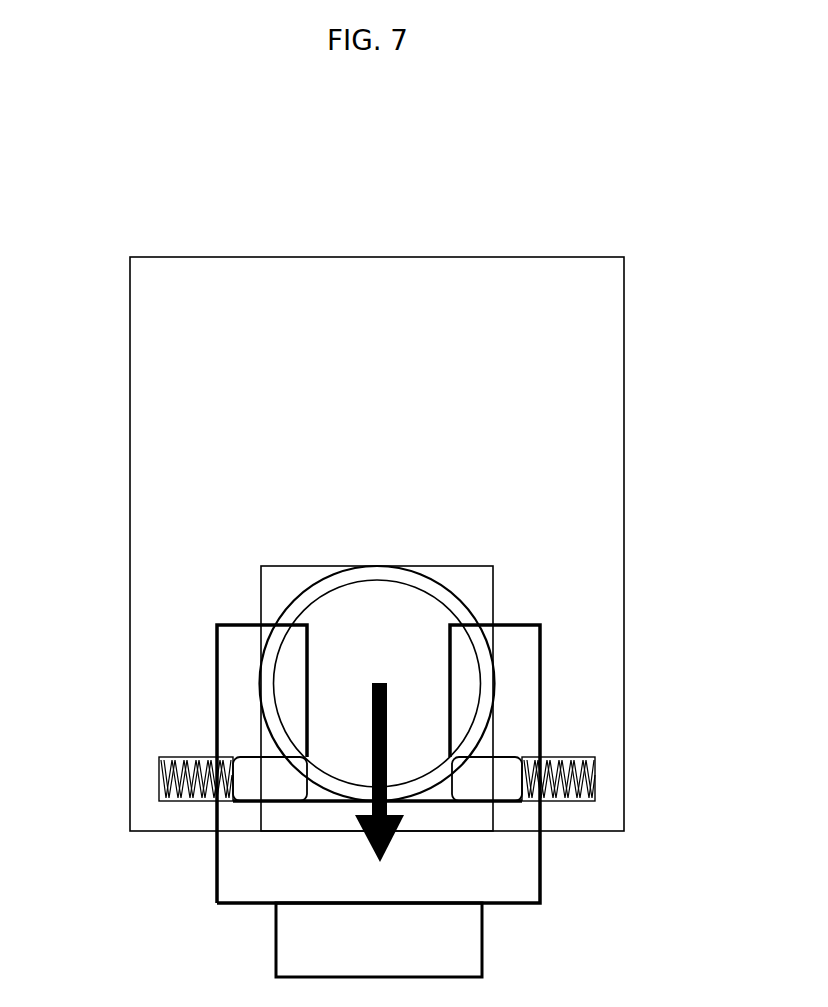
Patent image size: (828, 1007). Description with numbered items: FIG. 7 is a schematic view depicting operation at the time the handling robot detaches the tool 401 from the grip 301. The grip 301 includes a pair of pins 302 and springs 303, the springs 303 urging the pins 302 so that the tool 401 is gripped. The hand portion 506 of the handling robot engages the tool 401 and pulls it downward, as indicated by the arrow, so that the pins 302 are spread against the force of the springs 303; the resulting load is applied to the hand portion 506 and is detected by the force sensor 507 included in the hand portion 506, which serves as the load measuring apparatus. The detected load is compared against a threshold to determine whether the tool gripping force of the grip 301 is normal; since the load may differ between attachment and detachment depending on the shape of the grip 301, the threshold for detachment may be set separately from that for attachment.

The grip 301 is at (603, 528).
The tool 401 is at (345, 606).
The hand portion 506 is at (522, 872).
The pin 302 is at (278, 790).
The spring 303 is at (166, 800).
The force sensor 507 is at (462, 943).